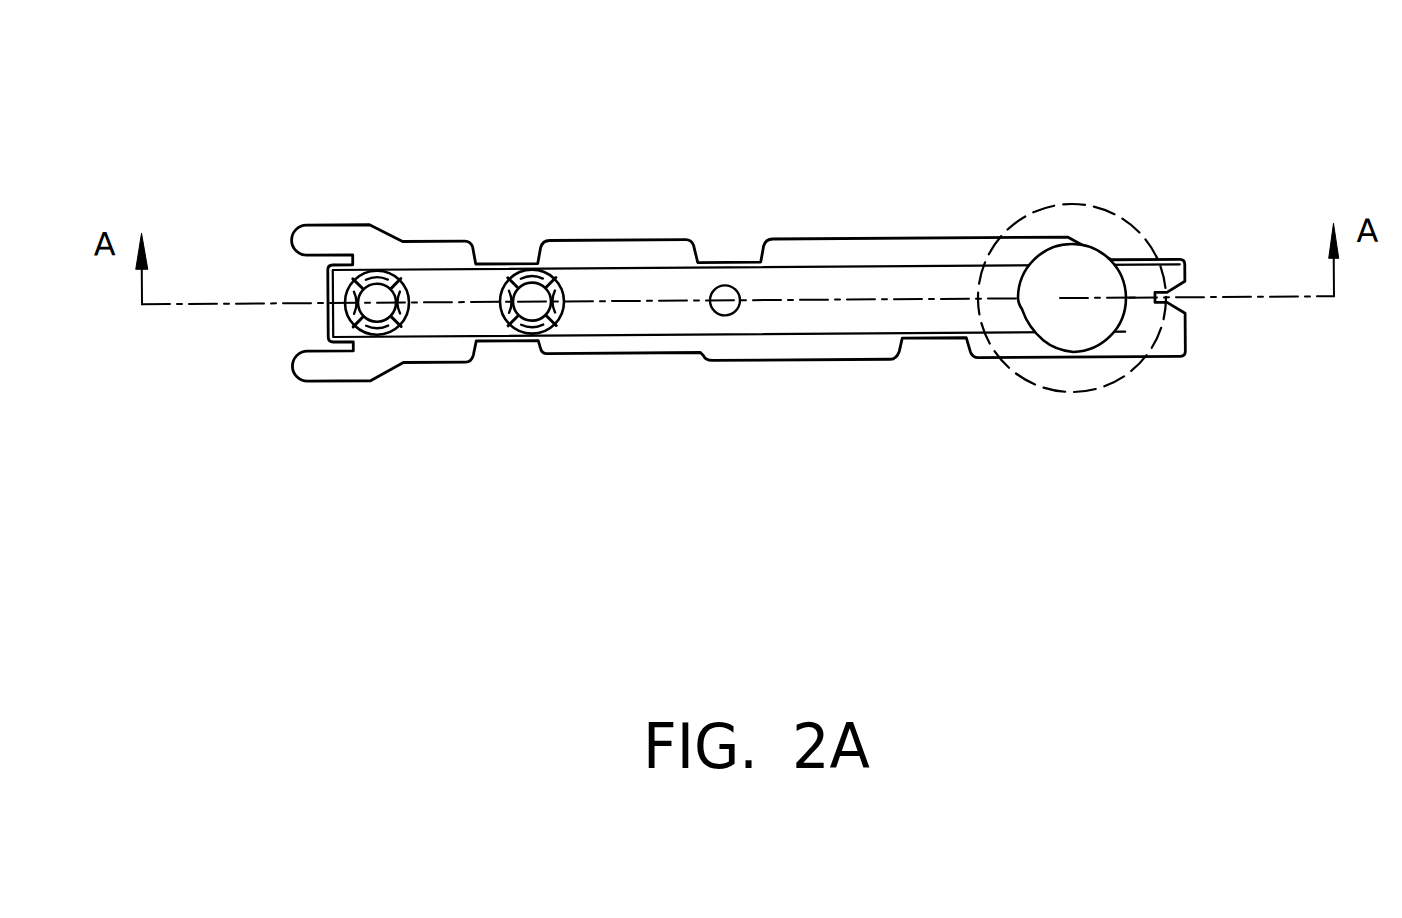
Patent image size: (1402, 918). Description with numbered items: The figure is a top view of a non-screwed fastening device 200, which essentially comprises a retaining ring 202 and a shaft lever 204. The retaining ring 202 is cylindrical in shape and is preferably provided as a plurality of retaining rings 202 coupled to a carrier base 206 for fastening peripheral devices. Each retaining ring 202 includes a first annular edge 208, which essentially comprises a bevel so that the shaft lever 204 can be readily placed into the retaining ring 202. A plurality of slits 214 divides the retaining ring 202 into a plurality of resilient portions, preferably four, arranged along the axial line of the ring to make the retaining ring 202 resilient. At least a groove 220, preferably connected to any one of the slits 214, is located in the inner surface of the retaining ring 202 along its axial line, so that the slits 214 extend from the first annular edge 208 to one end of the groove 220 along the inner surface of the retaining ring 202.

The non-screwed fastening device 200 is at (1075, 382).
The retaining ring 202 is at (357, 283).
The shaft lever 204 is at (1083, 258).
The carrier base 206 is at (726, 289).
The first annular edge 208 is at (377, 335).
The slits 214 is at (352, 281).
The groove 220 is at (398, 283).